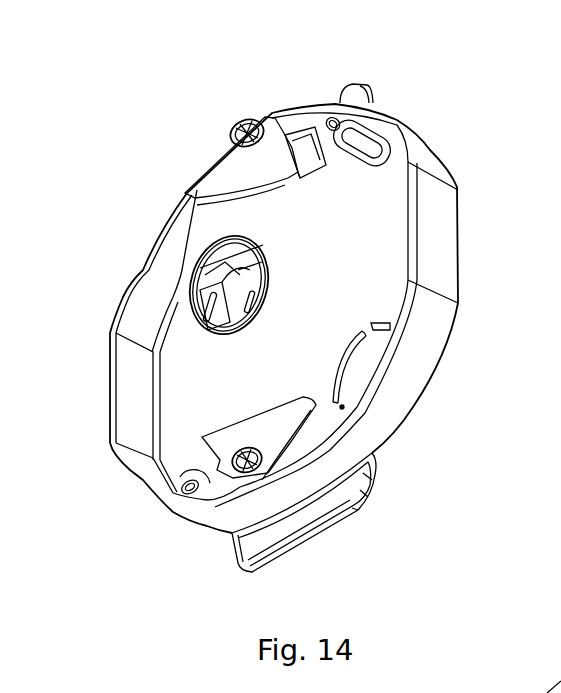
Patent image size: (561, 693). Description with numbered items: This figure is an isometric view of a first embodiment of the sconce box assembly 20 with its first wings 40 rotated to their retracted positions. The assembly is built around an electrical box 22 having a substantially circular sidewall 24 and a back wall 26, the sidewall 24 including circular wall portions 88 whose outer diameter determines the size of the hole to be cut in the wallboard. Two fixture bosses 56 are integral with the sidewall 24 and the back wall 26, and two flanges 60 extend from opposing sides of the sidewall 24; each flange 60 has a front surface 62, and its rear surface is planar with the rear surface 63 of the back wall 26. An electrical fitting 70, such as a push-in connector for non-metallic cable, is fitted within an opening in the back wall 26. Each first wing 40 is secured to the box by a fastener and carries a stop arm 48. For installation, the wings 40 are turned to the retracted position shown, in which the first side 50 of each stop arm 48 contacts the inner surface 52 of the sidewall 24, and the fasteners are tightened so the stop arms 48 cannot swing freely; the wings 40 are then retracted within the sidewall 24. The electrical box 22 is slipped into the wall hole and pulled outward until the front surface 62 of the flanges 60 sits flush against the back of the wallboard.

The sconce box assembly 20 is at (120, 157).
The electrical box 22 is at (140, 265).
The sidewall 24 is at (413, 347).
The back wall 26 is at (334, 306).
The first rotatable wing 40 is at (256, 180).
The stop arm 48 is at (313, 152).
The first side 50 is at (278, 117).
The inner surface 52 is at (307, 126).
The fixture boss 56 is at (345, 150).
The flange 60 is at (310, 554).
The front surface 62 is at (327, 506).
The rear surface 63 is at (450, 243).
The electrical fitting 70 is at (253, 303).
The circular wall portion 88 is at (403, 406).